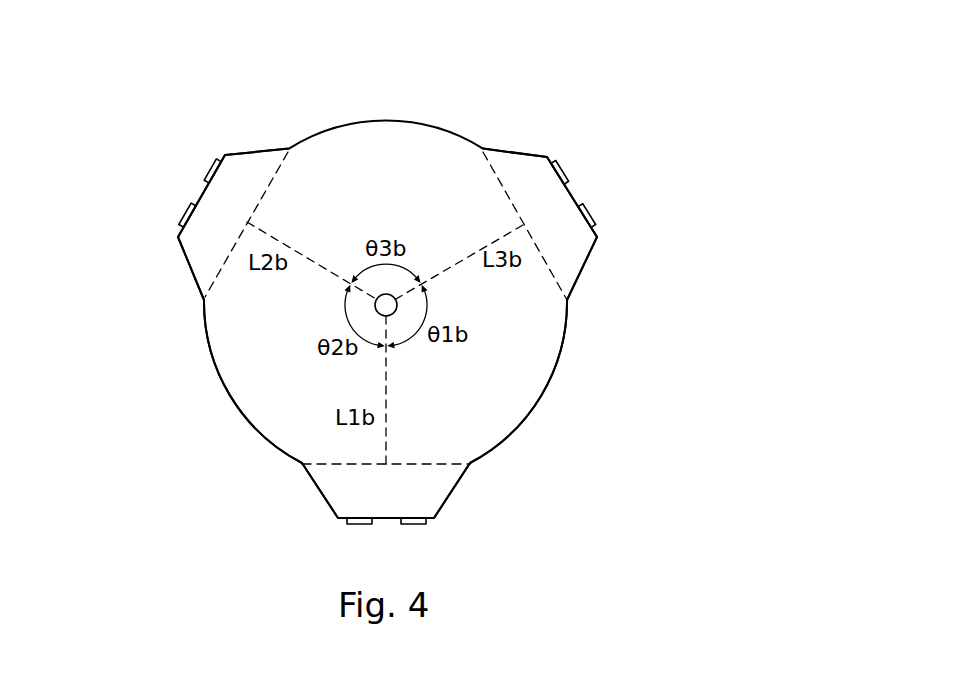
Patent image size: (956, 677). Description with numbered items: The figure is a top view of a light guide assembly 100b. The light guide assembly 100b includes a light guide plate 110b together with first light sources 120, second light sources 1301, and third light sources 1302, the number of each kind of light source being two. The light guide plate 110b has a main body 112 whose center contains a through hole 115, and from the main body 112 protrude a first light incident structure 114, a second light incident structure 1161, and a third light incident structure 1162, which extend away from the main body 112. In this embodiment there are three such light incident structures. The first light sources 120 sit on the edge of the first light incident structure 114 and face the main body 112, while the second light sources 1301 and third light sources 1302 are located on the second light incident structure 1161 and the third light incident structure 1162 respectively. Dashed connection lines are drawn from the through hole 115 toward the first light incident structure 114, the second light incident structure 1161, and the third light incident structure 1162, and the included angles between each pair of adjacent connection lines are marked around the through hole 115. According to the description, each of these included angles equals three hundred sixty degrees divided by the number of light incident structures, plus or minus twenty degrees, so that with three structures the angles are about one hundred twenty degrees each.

The light guide assembly 100b is at (175, 72).
The light guide plate 110b is at (760, 225).
The main body 112 is at (553, 345).
The first light incident structure 114 is at (430, 490).
The through hole 115 is at (375, 305).
The first light sources 120 is at (418, 523).
The second light incident structure 1161 is at (213, 205).
The third light incident structure 1162 is at (558, 207).
The second light sources 1301 is at (180, 213).
The third light sources 1302 is at (557, 164).